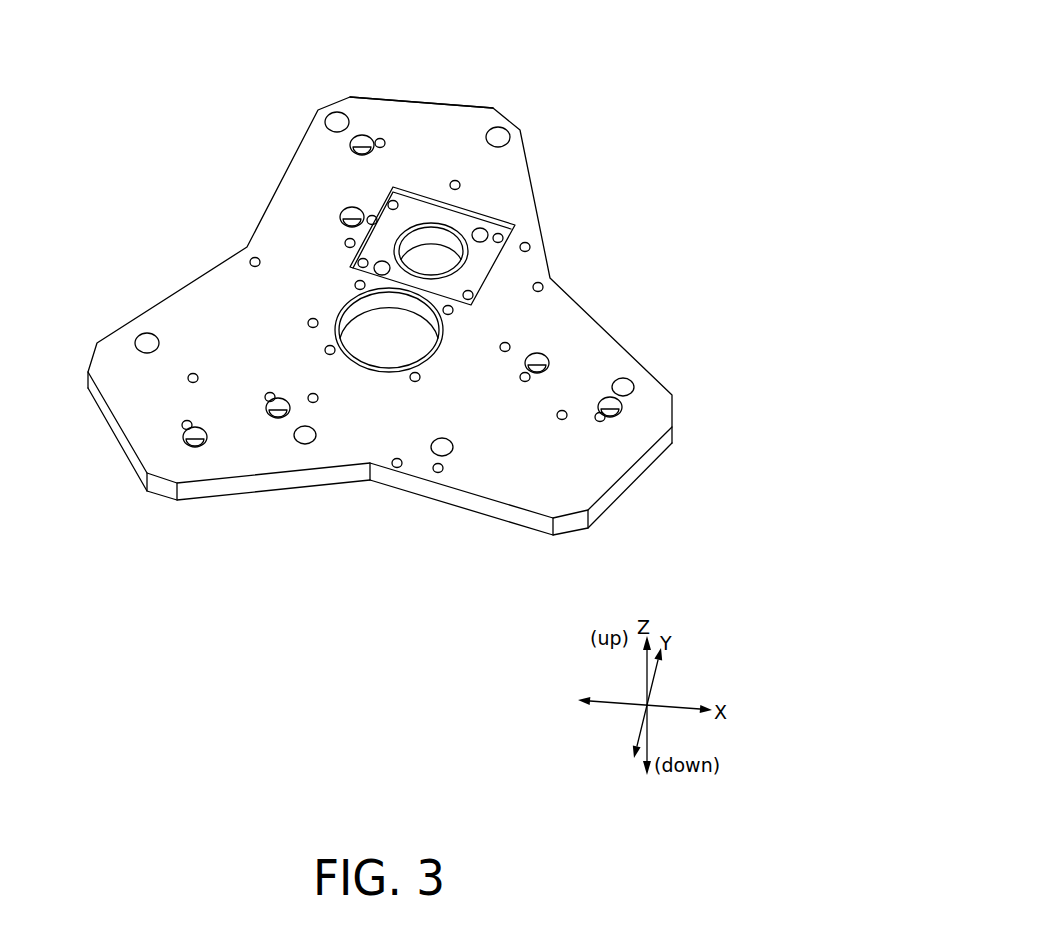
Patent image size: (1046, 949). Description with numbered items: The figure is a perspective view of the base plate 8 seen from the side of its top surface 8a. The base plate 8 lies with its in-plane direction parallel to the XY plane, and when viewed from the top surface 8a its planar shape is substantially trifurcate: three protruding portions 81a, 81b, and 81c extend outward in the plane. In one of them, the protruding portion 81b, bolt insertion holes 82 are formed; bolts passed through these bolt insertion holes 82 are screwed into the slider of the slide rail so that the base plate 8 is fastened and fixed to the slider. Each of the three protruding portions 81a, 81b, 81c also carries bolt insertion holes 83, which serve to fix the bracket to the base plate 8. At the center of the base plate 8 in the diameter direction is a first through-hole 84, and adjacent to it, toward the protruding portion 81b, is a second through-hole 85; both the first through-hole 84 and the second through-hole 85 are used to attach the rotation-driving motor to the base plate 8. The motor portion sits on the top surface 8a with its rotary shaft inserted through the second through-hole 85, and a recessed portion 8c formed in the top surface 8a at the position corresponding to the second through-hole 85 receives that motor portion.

The base plate 8 is at (425, 96).
The top surface 8a is at (295, 152).
The recessed portion 8c is at (430, 210).
The protruding portion 81a is at (108, 427).
The protruding portion 81b is at (378, 97).
The protruding portion 81c is at (618, 487).
The bolt insertion holes 82 is at (335, 127).
The bolt insertion holes 83 is at (348, 147).
The first through-hole 84 is at (345, 343).
The second through-hole 85 is at (433, 278).